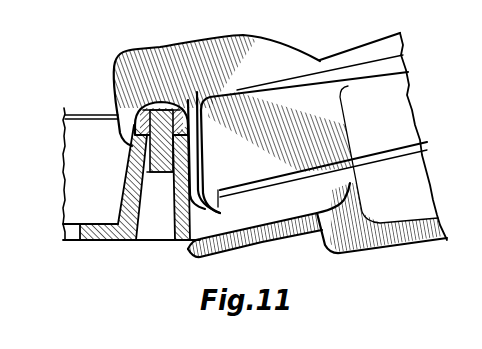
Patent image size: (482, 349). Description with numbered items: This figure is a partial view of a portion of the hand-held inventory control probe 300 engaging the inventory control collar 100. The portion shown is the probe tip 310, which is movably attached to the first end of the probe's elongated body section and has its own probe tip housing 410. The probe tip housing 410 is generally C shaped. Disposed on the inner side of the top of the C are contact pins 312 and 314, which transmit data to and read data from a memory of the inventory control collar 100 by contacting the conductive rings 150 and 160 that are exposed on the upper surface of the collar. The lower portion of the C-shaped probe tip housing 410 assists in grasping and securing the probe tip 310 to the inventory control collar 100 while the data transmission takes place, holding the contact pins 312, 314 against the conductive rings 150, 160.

The inventory control collar 100 is at (90, 250).
The conductive ring 150 is at (137, 152).
The conductive ring 160 is at (190, 162).
The hand-held inventory control probe 300 is at (323, 38).
The probe tip 310 is at (271, 27).
The contact pin 312 is at (169, 106).
The contact pin 314 is at (143, 78).
The probe tip housing 410 is at (270, 72).